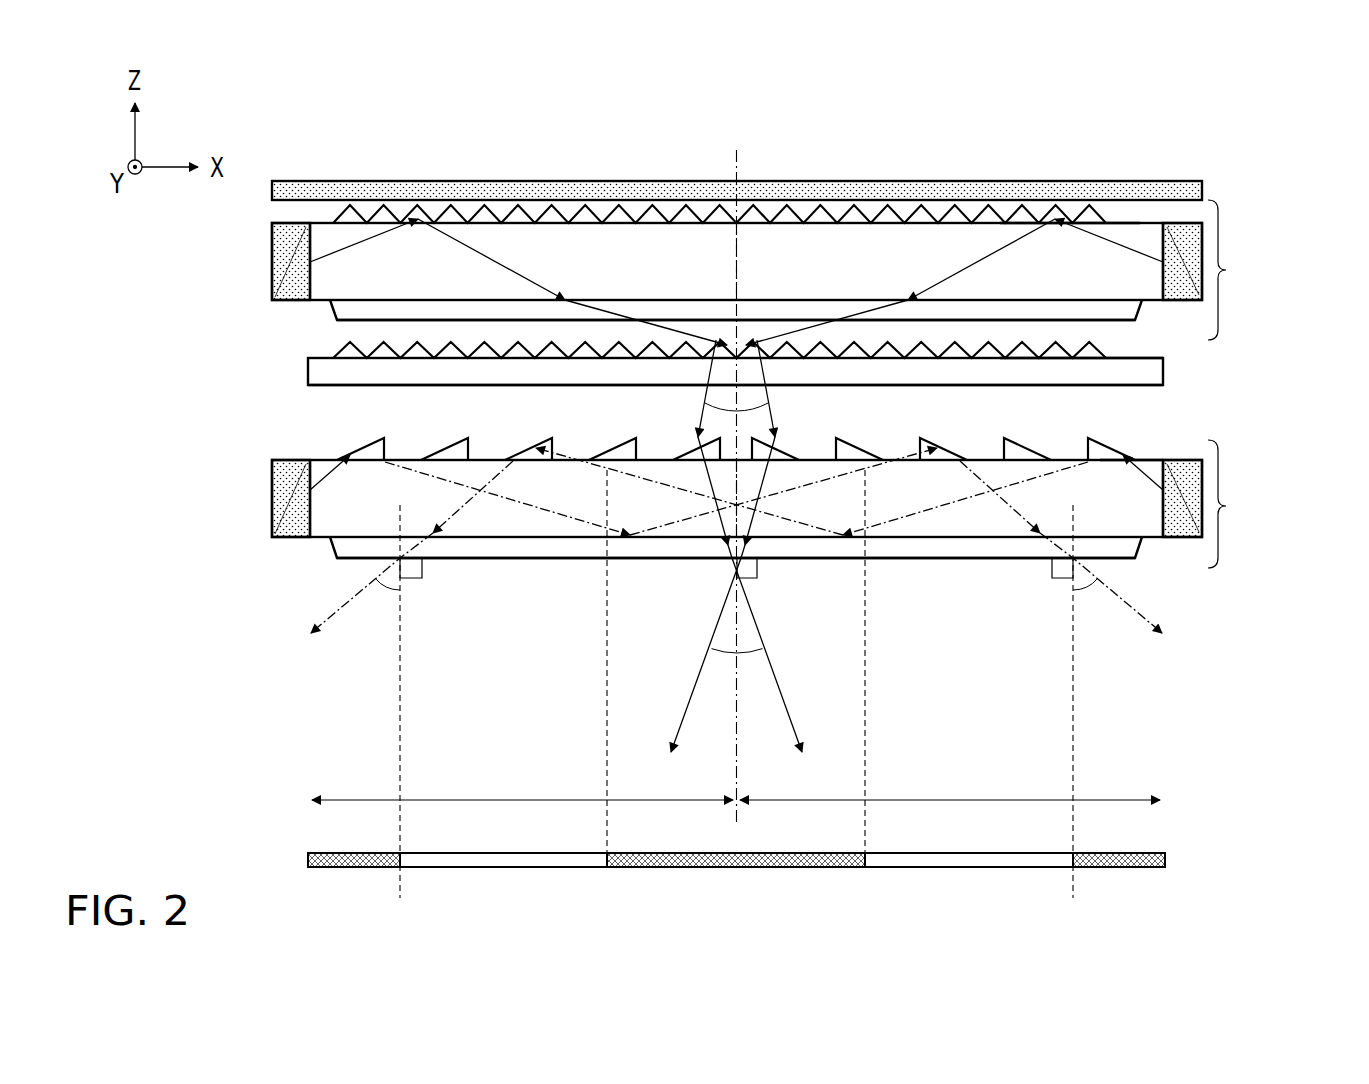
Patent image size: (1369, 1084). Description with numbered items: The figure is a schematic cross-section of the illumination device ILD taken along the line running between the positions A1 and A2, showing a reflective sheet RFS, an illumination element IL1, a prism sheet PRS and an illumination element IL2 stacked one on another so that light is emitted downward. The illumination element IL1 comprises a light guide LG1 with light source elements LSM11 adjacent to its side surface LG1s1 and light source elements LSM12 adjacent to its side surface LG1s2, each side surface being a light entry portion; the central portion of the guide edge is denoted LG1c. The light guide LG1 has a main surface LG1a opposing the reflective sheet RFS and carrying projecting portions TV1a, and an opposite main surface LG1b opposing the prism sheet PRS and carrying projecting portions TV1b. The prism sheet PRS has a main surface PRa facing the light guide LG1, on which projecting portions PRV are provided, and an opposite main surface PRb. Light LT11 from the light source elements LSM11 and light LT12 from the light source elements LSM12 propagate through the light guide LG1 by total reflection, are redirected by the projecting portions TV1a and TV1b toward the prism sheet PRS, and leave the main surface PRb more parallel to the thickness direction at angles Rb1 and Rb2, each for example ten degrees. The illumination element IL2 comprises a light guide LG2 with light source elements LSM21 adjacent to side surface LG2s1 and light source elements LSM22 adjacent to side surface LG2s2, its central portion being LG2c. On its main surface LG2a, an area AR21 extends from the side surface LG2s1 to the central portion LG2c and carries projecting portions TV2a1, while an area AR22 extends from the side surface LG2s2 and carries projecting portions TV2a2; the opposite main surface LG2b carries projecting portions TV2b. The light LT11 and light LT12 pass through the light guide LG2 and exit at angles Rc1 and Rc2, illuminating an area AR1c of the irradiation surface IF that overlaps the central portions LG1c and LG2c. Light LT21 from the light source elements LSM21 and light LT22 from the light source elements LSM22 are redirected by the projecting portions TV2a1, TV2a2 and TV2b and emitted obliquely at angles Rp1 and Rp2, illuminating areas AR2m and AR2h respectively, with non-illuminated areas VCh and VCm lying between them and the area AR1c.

The illumination device ILD is at (1258, 126).
The reflective sheet RFS is at (1027, 190).
The projecting portions TV1a is at (351, 208).
The light LT11 is at (497, 258).
The light LT12 is at (975, 257).
The light guide LG1 is at (1148, 240).
The main surface LG1a is at (1088, 206).
The main surface LG1b is at (335, 312).
The central portion LG1c is at (737, 212).
The side surface LG1s1 is at (300, 278).
The side surface LG1s2 is at (1167, 287).
The light source elements LSM11 is at (290, 243).
The light source elements LSM12 is at (1185, 222).
The projecting portions TV1b is at (340, 319).
The projecting portions PRV is at (337, 348).
The prism sheet PRS is at (310, 370).
The main surface PRa is at (1153, 345).
The main surface PRb is at (310, 385).
The illumination element IL1 is at (1238, 270).
The illumination element IL2 is at (1238, 504).
The angle Rb1 is at (755, 406).
The angle Rb2 is at (718, 406).
The angle Rc1 is at (722, 657).
The angle Rc2 is at (752, 657).
The light guide LG2 is at (1130, 520).
The main surface LG2a is at (1152, 458).
The main surface LG2b is at (330, 545).
The central portion LG2c is at (737, 463).
The side surface LG2s1 is at (305, 515).
The side surface LG2s2 is at (1185, 520).
The light source elements LSM21 is at (290, 492).
The light source elements LSM22 is at (1185, 470).
The projecting portions TV2a1 is at (375, 448).
The projecting portions TV2a2 is at (1018, 450).
The projecting portions TV2b is at (520, 560).
The angle Rp1 is at (1086, 589).
The angle Rp2 is at (388, 598).
The light LT21 is at (1137, 615).
The light LT22 is at (372, 615).
The section line end A1 is at (253, 666).
The section line end A2 is at (1245, 666).
The area AR21 is at (522, 784).
The area AR22 is at (950, 784).
The irradiation surface IF is at (1166, 860).
The area AR2h is at (357, 870).
The non-illuminated area VCh is at (517, 862).
The area AR1c is at (770, 870).
The non-illuminated area VCm is at (968, 862).
The area AR2m is at (1120, 870).